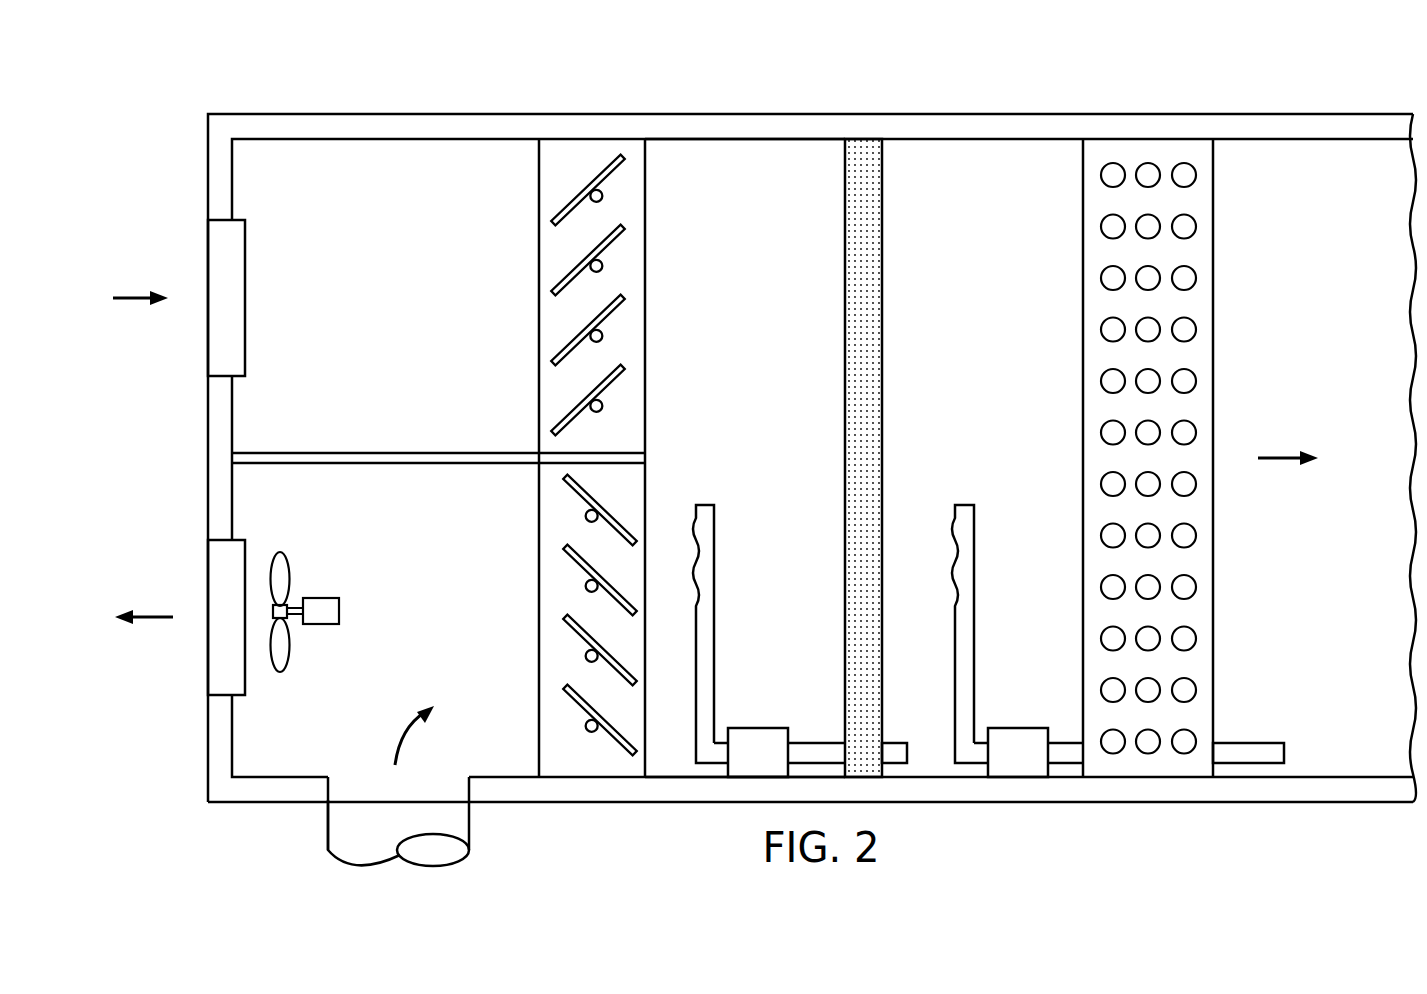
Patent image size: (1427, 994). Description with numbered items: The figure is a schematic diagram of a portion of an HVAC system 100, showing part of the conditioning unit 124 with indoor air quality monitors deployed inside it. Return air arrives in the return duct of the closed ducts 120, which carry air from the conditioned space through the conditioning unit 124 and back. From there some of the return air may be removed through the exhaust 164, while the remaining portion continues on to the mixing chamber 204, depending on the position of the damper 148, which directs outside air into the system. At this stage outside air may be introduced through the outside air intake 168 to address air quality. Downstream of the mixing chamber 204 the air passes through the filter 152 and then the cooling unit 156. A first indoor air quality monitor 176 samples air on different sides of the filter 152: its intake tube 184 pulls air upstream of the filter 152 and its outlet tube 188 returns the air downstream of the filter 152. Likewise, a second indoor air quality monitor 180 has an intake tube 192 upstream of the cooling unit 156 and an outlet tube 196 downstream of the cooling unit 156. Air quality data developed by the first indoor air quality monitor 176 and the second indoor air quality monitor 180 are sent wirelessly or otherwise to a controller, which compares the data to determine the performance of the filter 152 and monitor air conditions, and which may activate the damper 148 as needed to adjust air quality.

The HVAC system 100 is at (567, 63).
The conditioning unit 124 is at (438, 109).
The mixing chamber 204 is at (755, 155).
The filter 152 is at (883, 247).
The cooling unit 156 is at (1215, 247).
The outside air intake 168 is at (218, 255).
The exhaust 164 is at (217, 660).
The damper 148 is at (539, 620).
The closed ducts 120 is at (324, 818).
The intake tube 184 is at (714, 563).
The intake tube 192 is at (974, 563).
The first indoor air quality monitor 176 is at (757, 728).
The second indoor air quality monitor 180 is at (1017, 728).
The outlet tube 188 is at (895, 743).
The outlet tube 196 is at (1247, 743).